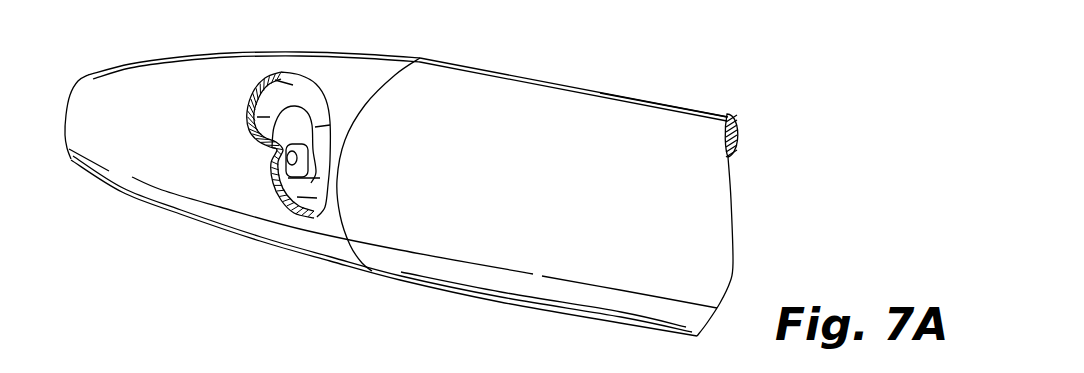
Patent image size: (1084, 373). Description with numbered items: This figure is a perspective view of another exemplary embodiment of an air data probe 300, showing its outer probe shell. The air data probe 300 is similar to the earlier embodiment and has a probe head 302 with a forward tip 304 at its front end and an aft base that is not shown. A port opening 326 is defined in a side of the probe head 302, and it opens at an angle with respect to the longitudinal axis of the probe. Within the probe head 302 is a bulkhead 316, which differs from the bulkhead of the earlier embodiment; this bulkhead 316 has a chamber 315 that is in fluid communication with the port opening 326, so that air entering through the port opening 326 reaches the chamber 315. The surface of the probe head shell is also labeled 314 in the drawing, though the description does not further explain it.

The air data probe 300 is at (722, 72).
The probe head 302 is at (471, 68).
The forward tip 304 is at (114, 184).
The housing outer surface 314 is at (634, 98).
The chamber 315 is at (283, 124).
The bulkhead 316 is at (304, 100).
The port opening 326 is at (268, 160).